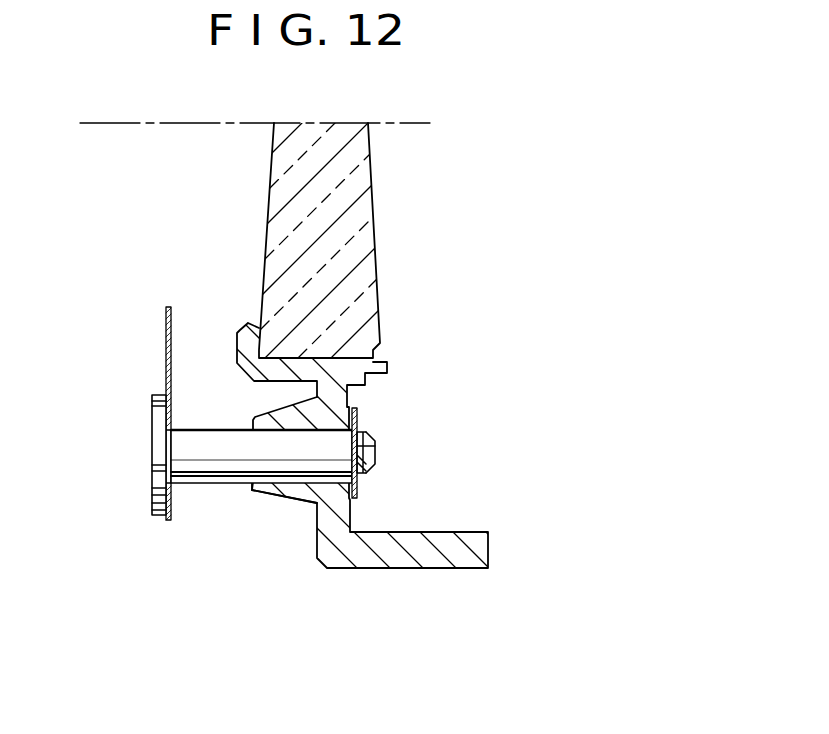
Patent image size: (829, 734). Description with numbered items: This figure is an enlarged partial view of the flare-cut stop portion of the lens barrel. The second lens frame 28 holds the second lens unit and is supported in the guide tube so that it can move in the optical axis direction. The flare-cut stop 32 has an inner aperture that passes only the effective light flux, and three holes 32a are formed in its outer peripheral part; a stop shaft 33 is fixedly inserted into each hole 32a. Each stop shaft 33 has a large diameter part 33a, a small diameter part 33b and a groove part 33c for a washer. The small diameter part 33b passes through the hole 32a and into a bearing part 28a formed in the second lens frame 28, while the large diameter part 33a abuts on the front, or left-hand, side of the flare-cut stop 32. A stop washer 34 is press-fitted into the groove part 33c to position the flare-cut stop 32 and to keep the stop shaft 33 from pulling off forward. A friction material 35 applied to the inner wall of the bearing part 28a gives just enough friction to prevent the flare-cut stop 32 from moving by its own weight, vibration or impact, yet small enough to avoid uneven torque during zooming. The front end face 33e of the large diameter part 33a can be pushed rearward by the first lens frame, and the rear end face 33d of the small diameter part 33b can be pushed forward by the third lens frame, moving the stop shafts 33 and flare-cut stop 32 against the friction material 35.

The second lens frame 28 is at (278, 463).
The bearing part 28a is at (262, 418).
The flare-cut stop 32 is at (166, 313).
The hole 32a is at (166, 474).
The stop shaft 33 is at (242, 470).
The large diameter part 33a is at (153, 417).
The small diameter part 33b is at (200, 465).
The groove part 33c is at (372, 463).
The rear end face 33d is at (376, 450).
The front end face 33e is at (153, 468).
The stop washer 34 is at (357, 418).
The friction material 35 is at (293, 484).